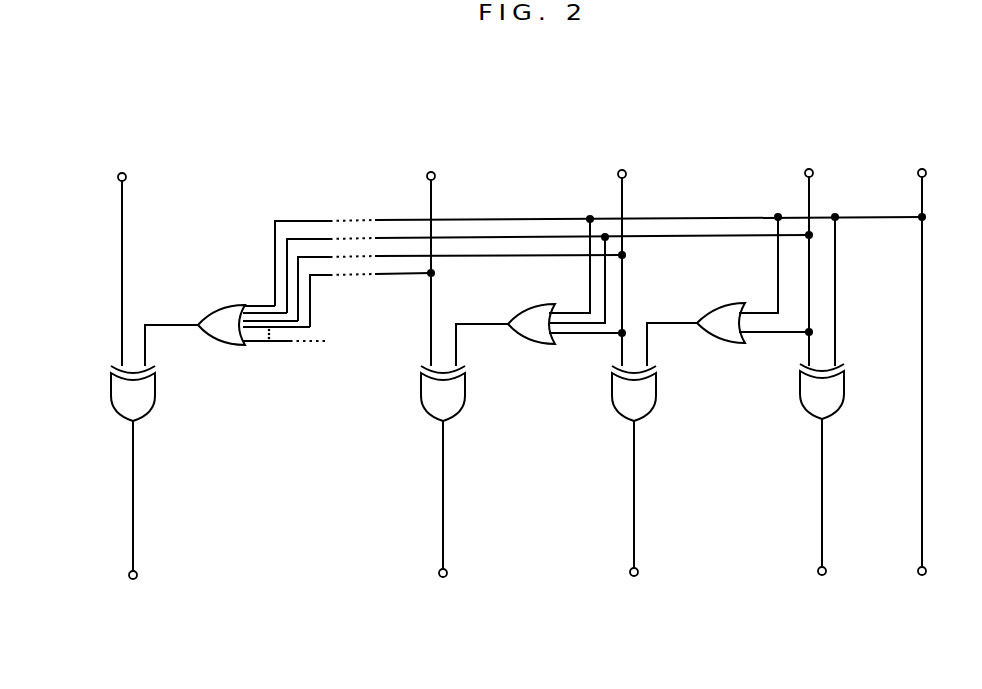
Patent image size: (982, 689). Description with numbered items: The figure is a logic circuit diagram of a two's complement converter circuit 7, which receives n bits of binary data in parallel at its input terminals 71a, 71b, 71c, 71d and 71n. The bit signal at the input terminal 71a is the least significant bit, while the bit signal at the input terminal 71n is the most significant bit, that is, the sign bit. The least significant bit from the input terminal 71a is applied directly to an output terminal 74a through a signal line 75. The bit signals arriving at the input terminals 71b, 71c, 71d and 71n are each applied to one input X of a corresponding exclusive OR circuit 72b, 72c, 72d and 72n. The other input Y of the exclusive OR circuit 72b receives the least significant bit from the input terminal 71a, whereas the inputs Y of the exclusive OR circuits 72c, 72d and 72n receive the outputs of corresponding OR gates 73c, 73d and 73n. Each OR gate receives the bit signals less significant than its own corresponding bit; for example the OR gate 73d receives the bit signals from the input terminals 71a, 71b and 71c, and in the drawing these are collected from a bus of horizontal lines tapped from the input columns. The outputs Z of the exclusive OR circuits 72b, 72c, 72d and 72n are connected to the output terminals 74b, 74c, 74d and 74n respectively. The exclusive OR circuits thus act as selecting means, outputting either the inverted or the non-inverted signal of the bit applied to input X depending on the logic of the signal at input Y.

The 2's complement converter circuit 7 is at (538, 107).
The input terminal 71n is at (125, 174).
The input terminal 71d is at (434, 173).
The input terminal 71c is at (625, 171).
The input terminal 71b is at (812, 170).
The input terminal 71a is at (925, 170).
The exclusive OR circuit 72n is at (150, 400).
The exclusive OR circuit 72d is at (457, 400).
The exclusive OR circuit 72c is at (650, 400).
The exclusive OR circuit 72b is at (830, 398).
The OR gate 73n is at (217, 313).
The OR gate 73d is at (530, 313).
The OR gate 73c is at (719, 311).
The output terminal 74n is at (136, 578).
The output terminal 74d is at (446, 576).
The output terminal 74c is at (637, 575).
The output terminal 74b is at (819, 574).
The output terminal 74a is at (919, 574).
The signal line 75 is at (924, 337).